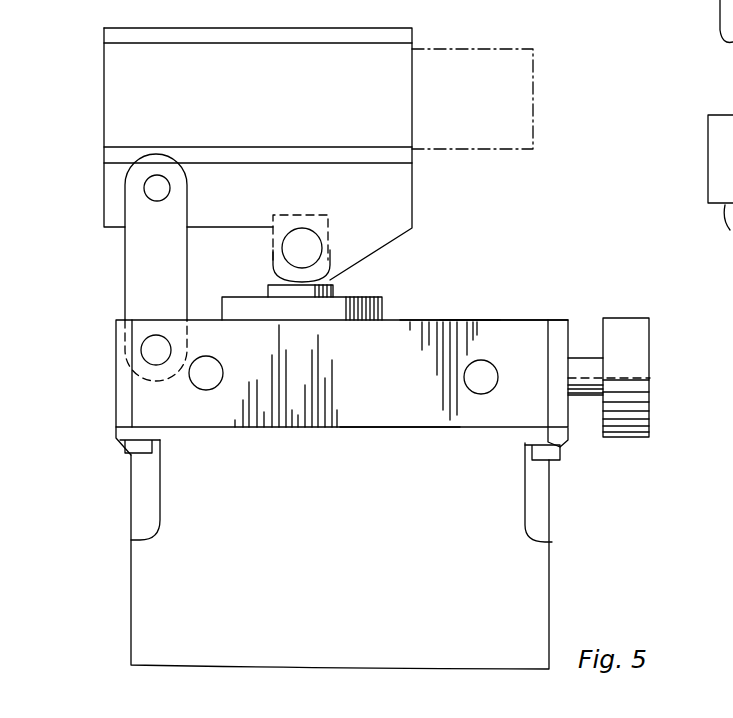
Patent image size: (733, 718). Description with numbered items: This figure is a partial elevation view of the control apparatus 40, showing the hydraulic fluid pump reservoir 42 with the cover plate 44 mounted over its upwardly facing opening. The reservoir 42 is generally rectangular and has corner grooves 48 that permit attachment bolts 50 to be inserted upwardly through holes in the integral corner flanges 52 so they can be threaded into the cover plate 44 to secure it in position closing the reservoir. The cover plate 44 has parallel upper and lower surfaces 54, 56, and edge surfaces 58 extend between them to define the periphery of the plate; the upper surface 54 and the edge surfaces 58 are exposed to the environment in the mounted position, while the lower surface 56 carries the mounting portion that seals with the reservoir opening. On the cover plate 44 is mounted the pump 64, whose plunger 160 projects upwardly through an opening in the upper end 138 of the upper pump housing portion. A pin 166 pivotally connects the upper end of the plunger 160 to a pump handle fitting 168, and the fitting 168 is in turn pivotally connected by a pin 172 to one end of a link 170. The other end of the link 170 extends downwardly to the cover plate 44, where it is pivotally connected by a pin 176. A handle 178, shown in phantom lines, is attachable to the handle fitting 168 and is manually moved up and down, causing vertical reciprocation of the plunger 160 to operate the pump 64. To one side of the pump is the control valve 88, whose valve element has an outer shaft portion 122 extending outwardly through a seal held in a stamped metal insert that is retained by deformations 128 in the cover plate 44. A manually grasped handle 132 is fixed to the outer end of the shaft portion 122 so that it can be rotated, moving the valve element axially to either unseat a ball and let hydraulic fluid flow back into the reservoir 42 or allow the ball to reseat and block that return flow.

The control apparatus 40 is at (530, 300).
The hydraulic fluid pump reservoir 42 is at (523, 582).
The cover plate 44 is at (505, 318).
The corner grooves 48 is at (138, 515).
The attachment bolts 50 is at (130, 457).
The integral corner flanges 52 is at (117, 433).
The upper surface 54 is at (467, 322).
The lower surface 56 is at (396, 431).
The edge surfaces 58 is at (288, 398).
The pump 64 is at (253, 290).
The control valve 88 is at (652, 362).
The outer shaft portion 122 is at (573, 370).
The deformations 128 is at (732, 60).
The manually grasped handle 132 is at (640, 412).
The upper end 138 is at (380, 312).
The plunger 160 is at (344, 281).
The pin 166 is at (318, 228).
The pump handle fitting 168 is at (388, 203).
The link 170 is at (162, 213).
The pin 172 is at (160, 186).
The pin 176 is at (150, 353).
The handle 178 is at (475, 60).